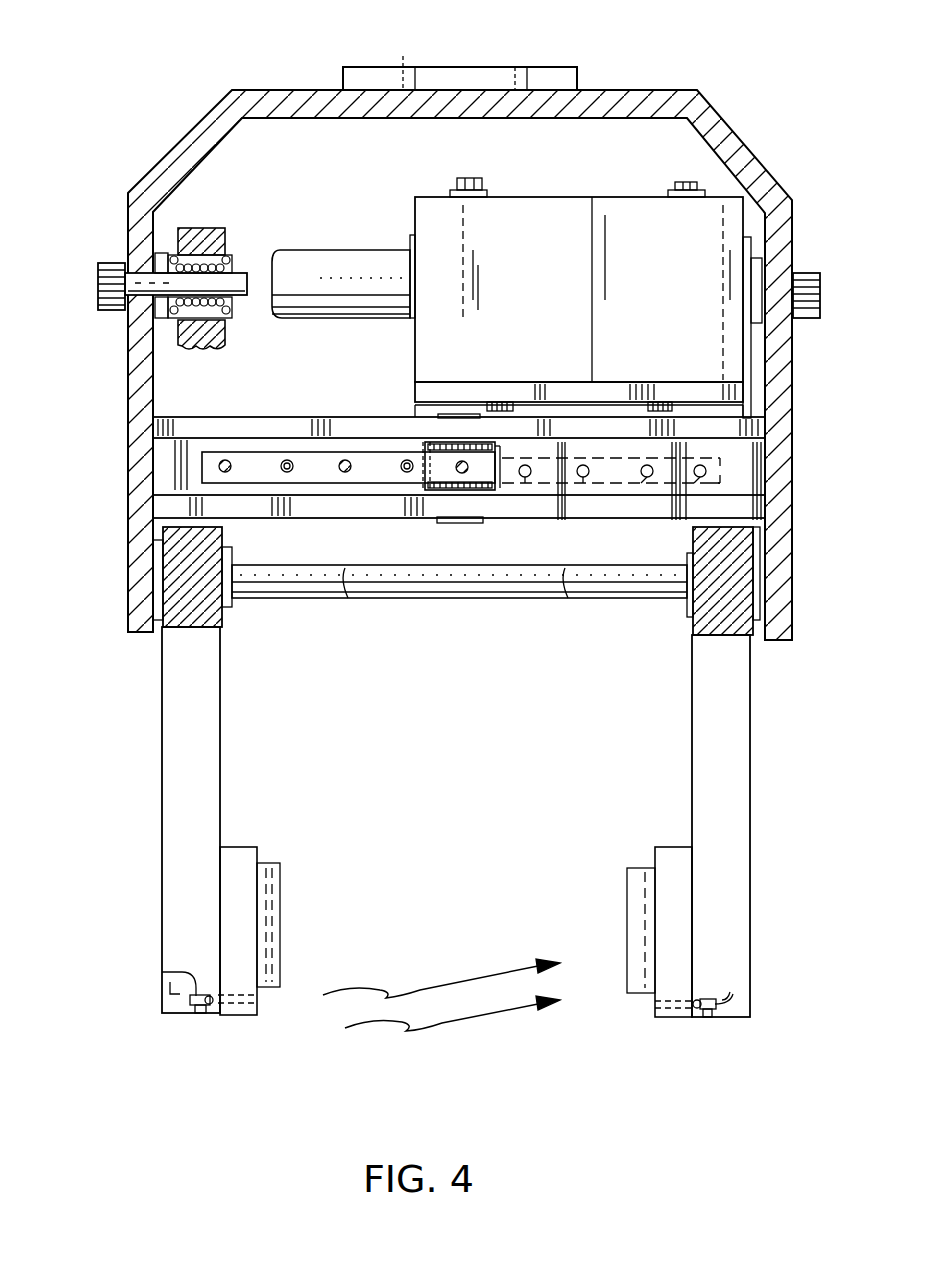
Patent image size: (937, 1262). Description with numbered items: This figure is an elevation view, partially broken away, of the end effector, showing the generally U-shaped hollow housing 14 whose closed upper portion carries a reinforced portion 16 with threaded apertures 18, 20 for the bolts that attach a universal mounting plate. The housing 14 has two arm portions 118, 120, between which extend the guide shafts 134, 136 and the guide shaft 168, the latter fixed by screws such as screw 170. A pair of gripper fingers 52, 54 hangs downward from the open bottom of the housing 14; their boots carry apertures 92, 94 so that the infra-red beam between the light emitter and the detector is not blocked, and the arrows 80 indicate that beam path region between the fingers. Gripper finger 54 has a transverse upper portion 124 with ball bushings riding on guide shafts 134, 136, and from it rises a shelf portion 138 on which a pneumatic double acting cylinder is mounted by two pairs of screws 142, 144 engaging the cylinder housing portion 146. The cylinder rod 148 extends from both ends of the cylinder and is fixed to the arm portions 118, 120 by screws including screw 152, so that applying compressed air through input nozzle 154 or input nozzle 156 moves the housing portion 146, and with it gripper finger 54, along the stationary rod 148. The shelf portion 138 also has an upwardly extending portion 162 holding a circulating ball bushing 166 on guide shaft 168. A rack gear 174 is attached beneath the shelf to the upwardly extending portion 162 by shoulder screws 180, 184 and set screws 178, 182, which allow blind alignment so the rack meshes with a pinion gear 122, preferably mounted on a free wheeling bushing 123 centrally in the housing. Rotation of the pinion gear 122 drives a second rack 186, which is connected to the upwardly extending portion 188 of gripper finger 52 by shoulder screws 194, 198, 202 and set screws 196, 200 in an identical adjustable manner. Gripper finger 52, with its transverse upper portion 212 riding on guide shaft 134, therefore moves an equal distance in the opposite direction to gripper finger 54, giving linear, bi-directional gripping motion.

The housing 14 is at (664, 92).
The reinforced portion 16 is at (459, 72).
The threaded aperture 18 is at (406, 55).
The threaded aperture 20 is at (520, 72).
The gripper finger 52 is at (186, 895).
The gripper finger 54 is at (735, 802).
The air flow 80 is at (468, 976).
The aperture 92 is at (163, 973).
The aperture 94 is at (710, 996).
The arm portion 118 is at (778, 410).
The arm portion 120 is at (130, 388).
The pinion gear 122 is at (422, 446).
The free wheeling bushing 123 is at (472, 414).
The upper portion 124 is at (750, 563).
The guide shaft 134 is at (300, 588).
The guide shaft 136 is at (468, 592).
The shelf portion 138 is at (740, 396).
The screws 142 is at (497, 400).
The screws 144 is at (656, 400).
The housing portion 146 is at (546, 210).
The rod 148 is at (320, 256).
The screw 152 is at (804, 272).
The input nozzle 154 is at (478, 184).
The input nozzle 156 is at (678, 186).
The upwardly extending portion 162 is at (200, 230).
The circulating ball bushing 166 is at (228, 256).
The guide shaft 168 is at (245, 276).
The screw 170 is at (98, 290).
The rack gear 174 is at (732, 466).
The set screw 178 is at (522, 485).
The shoulder screw 180 is at (586, 485).
The set screw 182 is at (645, 486).
The shoulder screw 184 is at (698, 485).
The rack 186 is at (192, 496).
The upwardly extending portion 188 is at (203, 472).
The shoulder screw 194 is at (224, 458).
The set screw 196 is at (285, 458).
The shoulder screw 198 is at (345, 474).
The set screw 200 is at (400, 458).
The shoulder screw 202 is at (458, 472).
The transverse upper portion 212 is at (166, 630).